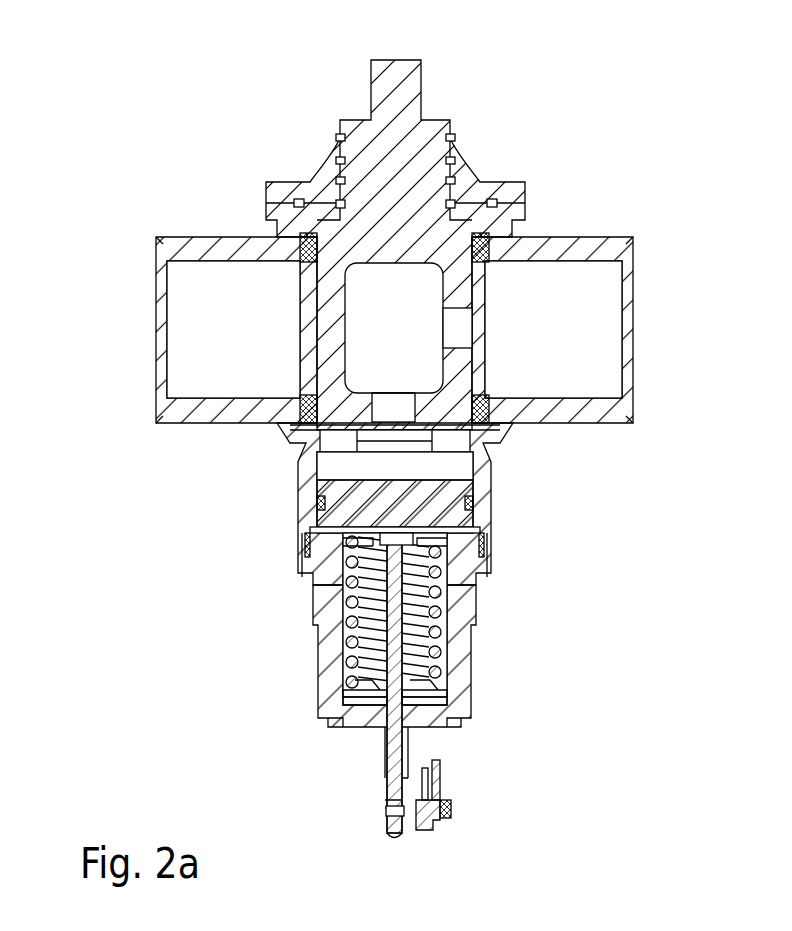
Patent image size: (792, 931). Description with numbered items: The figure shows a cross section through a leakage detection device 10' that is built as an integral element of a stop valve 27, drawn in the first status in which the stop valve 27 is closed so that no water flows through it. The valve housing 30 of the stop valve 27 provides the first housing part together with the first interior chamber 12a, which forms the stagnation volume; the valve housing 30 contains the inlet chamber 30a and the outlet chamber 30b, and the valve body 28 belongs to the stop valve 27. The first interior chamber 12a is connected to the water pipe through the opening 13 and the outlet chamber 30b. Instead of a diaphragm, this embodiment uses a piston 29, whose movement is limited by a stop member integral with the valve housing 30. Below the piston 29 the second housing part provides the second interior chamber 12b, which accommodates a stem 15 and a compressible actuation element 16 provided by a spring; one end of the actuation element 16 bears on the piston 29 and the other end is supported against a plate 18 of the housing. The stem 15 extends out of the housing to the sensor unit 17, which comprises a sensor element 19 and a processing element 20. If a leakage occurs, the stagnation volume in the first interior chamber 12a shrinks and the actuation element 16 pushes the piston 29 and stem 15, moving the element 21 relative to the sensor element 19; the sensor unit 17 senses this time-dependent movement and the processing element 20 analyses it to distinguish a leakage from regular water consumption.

The stop valve 27 is at (533, 166).
The valve housing 30 is at (592, 250).
The inlet chamber 30a is at (202, 321).
The outlet chamber 30b is at (583, 321).
The valve body 28 is at (326, 300).
The opening 13 is at (398, 441).
The first interior chamber 12a is at (340, 460).
The piston 29 is at (422, 506).
The second interior chamber 12b is at (342, 552).
The actuation element 16 is at (445, 612).
The stem 15 is at (390, 652).
The leakage detection device 10' is at (396, 596).
The plate 18 is at (362, 692).
The processing element 20 is at (450, 803).
The sensor unit 17 is at (473, 824).
The sensor element 19 is at (426, 826).
The element 21 is at (395, 842).